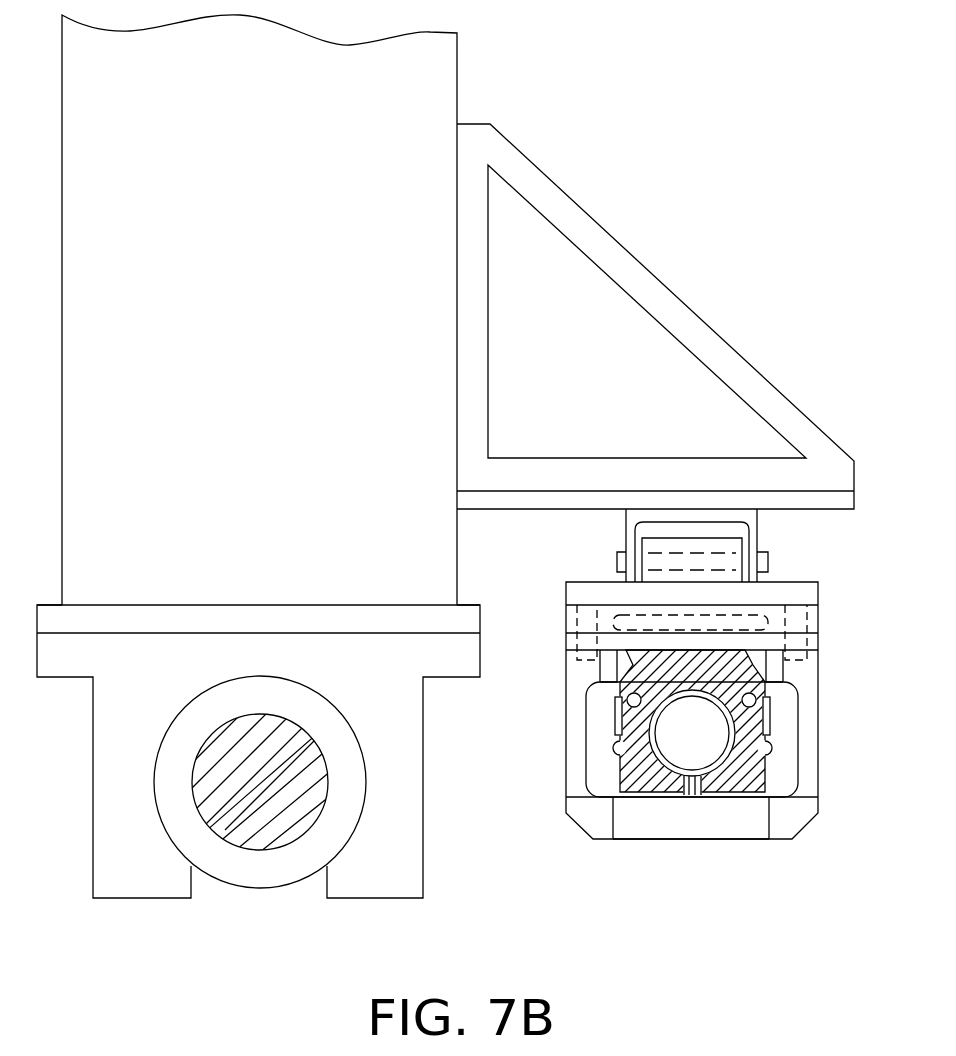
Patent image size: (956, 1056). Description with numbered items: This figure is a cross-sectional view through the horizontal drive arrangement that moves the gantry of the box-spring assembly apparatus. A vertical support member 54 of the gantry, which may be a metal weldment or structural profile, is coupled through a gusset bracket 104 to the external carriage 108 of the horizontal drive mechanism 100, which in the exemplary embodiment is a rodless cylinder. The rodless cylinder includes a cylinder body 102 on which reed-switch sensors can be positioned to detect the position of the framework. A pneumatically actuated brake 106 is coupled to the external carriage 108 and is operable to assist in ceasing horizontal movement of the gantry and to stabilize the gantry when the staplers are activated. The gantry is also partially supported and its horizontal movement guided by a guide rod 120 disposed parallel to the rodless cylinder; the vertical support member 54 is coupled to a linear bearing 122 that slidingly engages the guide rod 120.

The vertical support member 54 is at (283, 163).
The gusset bracket 104 is at (571, 217).
The pneumatically actuated brake 106 is at (808, 621).
The cylinder body 102 is at (628, 730).
The horizontal drive mechanism 100 is at (682, 699).
The external carriage 108 is at (685, 838).
The guide rod 120 is at (265, 840).
The linear bearing 122 is at (125, 865).